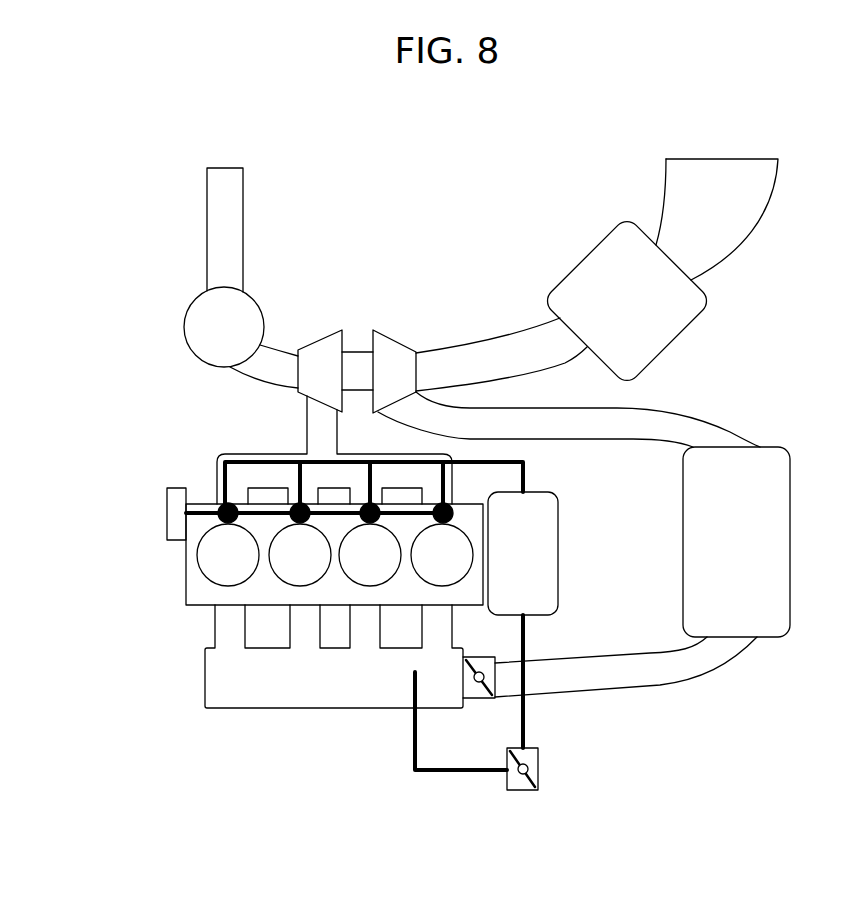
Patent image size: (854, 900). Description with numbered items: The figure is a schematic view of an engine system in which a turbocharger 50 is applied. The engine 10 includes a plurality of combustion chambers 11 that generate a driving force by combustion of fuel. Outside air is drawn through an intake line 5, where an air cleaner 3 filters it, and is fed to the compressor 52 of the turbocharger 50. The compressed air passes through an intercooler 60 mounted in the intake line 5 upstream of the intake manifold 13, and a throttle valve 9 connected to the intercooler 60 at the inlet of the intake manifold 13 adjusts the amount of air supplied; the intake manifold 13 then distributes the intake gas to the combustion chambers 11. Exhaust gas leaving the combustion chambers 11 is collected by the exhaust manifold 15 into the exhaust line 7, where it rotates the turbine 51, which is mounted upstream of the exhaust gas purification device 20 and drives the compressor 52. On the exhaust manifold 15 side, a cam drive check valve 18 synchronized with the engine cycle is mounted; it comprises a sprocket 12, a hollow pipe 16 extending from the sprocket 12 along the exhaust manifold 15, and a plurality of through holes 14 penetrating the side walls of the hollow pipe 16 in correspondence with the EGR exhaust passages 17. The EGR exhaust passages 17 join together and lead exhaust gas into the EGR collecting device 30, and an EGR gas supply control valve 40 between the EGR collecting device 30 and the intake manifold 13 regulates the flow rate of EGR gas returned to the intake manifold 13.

The air cleaner 3 is at (710, 300).
The intake line 5 is at (690, 413).
The exhaust line 7 is at (207, 226).
The throttle valve 9 is at (478, 698).
The engine 10 is at (312, 578).
The combustion chambers 11 is at (208, 577).
The sprocket 12 is at (178, 488).
The intake manifold 13 is at (335, 708).
The through holes 14 is at (217, 505).
The exhaust manifold 15 is at (243, 454).
The hollow pipe 16 is at (187, 555).
The EGR exhaust passages 17 is at (278, 462).
The cam drive check valve 18 is at (168, 470).
The exhaust gas purification device 20 is at (184, 328).
The EGR collecting device 30 is at (561, 553).
The EGR gas supply control valve 40 is at (540, 770).
The turbocharger 50 is at (362, 324).
The turbine 51 is at (333, 342).
The compressor 52 is at (399, 339).
The intercooler 60 is at (683, 541).